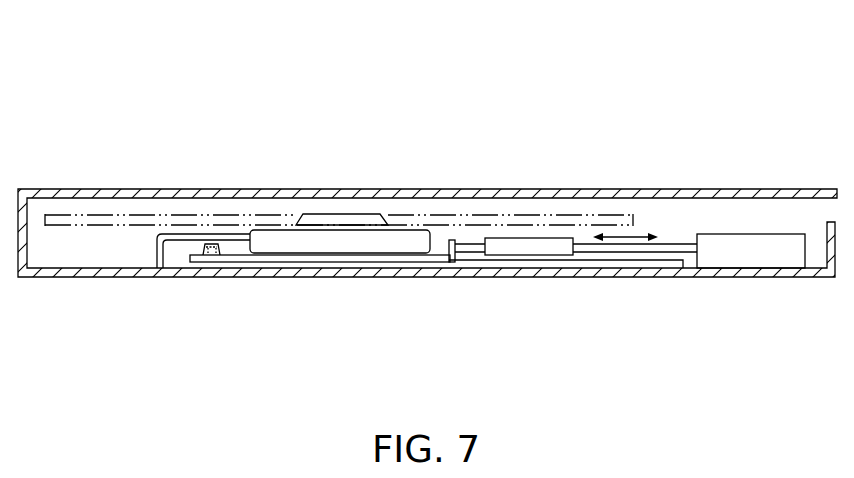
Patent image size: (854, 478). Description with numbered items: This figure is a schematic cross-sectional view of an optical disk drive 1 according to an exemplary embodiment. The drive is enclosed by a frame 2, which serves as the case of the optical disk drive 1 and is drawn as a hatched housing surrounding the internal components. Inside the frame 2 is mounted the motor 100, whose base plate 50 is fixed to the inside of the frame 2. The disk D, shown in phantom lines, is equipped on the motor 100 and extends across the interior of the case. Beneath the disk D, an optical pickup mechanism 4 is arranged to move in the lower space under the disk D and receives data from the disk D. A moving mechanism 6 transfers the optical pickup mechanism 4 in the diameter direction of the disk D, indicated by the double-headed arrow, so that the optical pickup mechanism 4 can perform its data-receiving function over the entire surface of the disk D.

The optical disk drive 1 is at (442, 80).
The frame 2 is at (96, 278).
The optical pickup mechanism 4 is at (520, 254).
The moving mechanism 6 is at (670, 243).
The base plate 50 is at (364, 262).
The motor 100 is at (345, 208).
The disk D is at (498, 218).